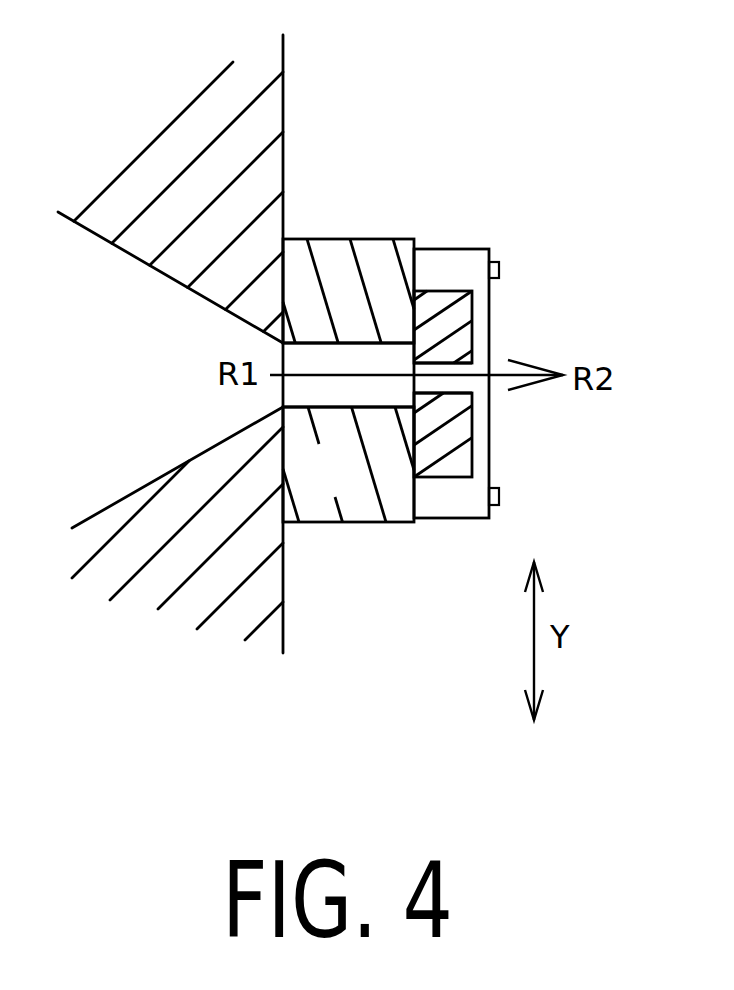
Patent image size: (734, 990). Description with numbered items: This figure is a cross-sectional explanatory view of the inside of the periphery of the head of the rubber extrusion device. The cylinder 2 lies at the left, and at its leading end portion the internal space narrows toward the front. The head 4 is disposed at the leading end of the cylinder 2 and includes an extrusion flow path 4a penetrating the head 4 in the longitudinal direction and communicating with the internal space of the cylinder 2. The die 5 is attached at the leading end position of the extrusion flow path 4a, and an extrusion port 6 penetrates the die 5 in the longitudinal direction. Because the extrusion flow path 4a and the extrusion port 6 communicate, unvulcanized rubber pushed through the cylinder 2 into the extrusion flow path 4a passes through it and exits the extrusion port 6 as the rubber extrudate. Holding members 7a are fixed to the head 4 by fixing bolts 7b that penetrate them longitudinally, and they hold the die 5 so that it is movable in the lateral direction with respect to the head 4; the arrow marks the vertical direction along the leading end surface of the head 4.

The cylinder 2 is at (270, 125).
The head 4 is at (337, 252).
The extrusion flow path 4a is at (333, 395).
The die 5 is at (447, 290).
The extrusion port 6 is at (467, 387).
The holding member 7a is at (483, 322).
The fixing bolt 7b is at (500, 497).